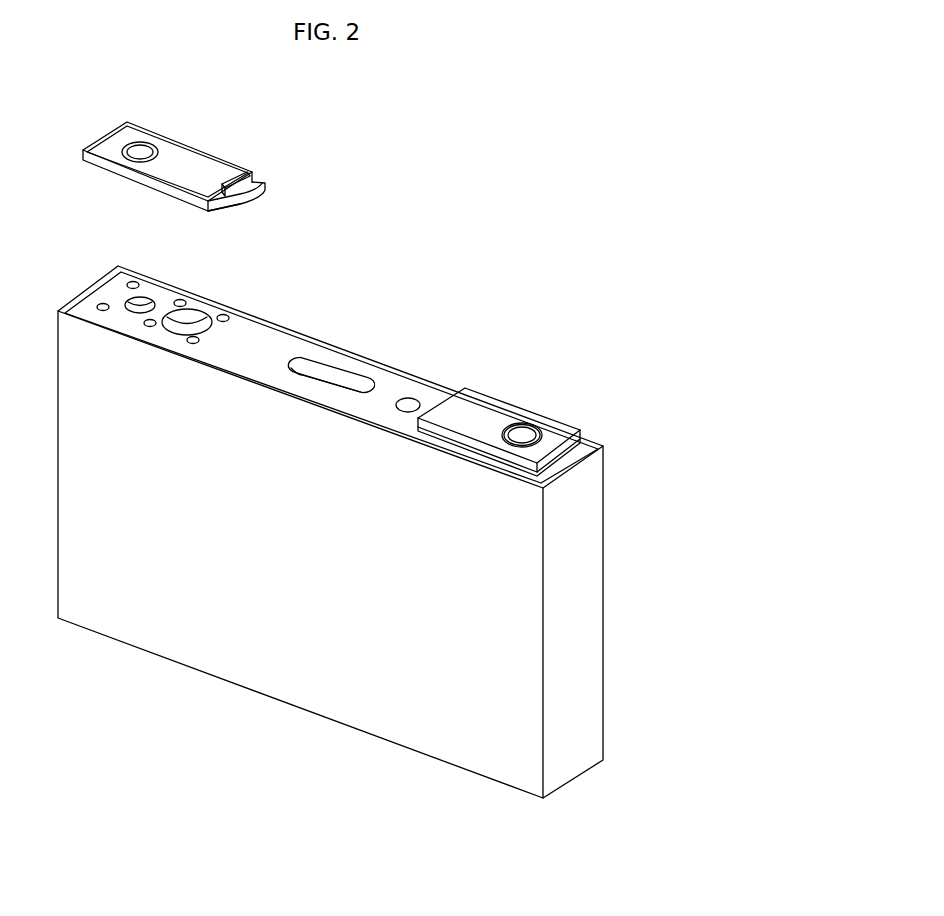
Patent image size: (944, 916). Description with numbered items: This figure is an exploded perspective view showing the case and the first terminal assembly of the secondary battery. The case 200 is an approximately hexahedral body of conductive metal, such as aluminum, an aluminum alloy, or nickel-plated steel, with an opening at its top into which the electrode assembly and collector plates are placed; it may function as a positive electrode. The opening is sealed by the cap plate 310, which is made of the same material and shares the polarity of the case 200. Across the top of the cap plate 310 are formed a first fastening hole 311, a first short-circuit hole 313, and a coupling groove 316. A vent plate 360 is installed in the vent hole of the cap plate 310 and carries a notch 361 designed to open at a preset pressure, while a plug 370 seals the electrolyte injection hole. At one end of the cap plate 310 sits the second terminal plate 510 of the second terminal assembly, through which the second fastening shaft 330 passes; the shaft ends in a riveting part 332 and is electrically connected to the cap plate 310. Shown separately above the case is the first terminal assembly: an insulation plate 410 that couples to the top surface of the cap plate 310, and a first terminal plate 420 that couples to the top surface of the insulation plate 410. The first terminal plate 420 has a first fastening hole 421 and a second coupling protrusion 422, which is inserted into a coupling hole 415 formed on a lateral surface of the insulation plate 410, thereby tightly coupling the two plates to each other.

The case 200 is at (588, 615).
The cap plate 310 is at (395, 380).
The first fastening hole 311 is at (155, 305).
The first short-circuit hole 313 is at (207, 318).
The coupling groove 316 is at (225, 315).
The vent plate 360 is at (343, 380).
The notch 361 is at (318, 365).
The plug 370 is at (410, 398).
The second terminal plate 510 is at (480, 402).
The second fastening shaft 330 is at (522, 425).
The riveting part 332 is at (540, 430).
The first terminal plate 420 is at (200, 163).
The first fastening hole 421 is at (162, 150).
The insulation plate 410 is at (265, 173).
The coupling hole 415 is at (265, 193).
The second coupling protrusion 422 is at (243, 208).